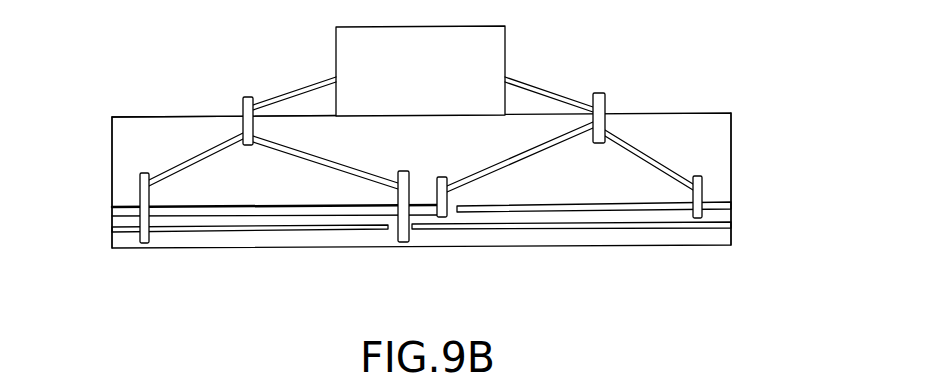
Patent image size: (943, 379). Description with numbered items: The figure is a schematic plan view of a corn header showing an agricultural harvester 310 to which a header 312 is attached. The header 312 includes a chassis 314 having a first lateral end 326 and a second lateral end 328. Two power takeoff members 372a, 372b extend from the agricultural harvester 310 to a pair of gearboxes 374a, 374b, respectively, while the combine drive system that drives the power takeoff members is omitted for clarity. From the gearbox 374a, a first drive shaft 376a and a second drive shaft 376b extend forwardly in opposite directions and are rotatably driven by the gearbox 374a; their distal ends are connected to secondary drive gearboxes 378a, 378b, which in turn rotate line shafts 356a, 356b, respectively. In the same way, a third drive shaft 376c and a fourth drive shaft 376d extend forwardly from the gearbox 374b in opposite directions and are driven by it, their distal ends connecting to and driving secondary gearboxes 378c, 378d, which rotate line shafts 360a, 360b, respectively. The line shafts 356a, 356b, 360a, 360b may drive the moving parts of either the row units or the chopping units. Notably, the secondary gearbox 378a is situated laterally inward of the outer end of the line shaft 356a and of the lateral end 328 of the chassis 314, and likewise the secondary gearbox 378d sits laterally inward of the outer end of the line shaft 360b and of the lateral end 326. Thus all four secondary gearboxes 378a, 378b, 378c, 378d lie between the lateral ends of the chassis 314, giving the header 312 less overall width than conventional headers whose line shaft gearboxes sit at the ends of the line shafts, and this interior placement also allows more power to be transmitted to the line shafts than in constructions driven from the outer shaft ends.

The agricultural harvester 310 is at (524, 32).
The header 312 is at (141, 97).
The chassis 314 is at (112, 117).
The first lateral end 326 is at (112, 160).
The second lateral end 328 is at (732, 147).
The line shaft 356a is at (574, 206).
The line shaft 356b is at (267, 184).
The line shaft 360a is at (637, 231).
The line shaft 360b is at (223, 232).
The power takeoff member 372a is at (534, 82).
The power takeoff member 372b is at (306, 90).
The gearbox 374a is at (605, 101).
The gearbox 374b is at (243, 100).
The first drive shaft 376a is at (648, 153).
The second drive shaft 376b is at (530, 152).
The third drive shaft 376c is at (320, 158).
The fourth drive shaft 376d is at (197, 155).
The secondary drive gearbox 378a is at (702, 192).
The secondary drive gearbox 378b is at (447, 195).
The secondary gearbox 378c is at (398, 197).
The secondary gearbox 378d is at (150, 198).